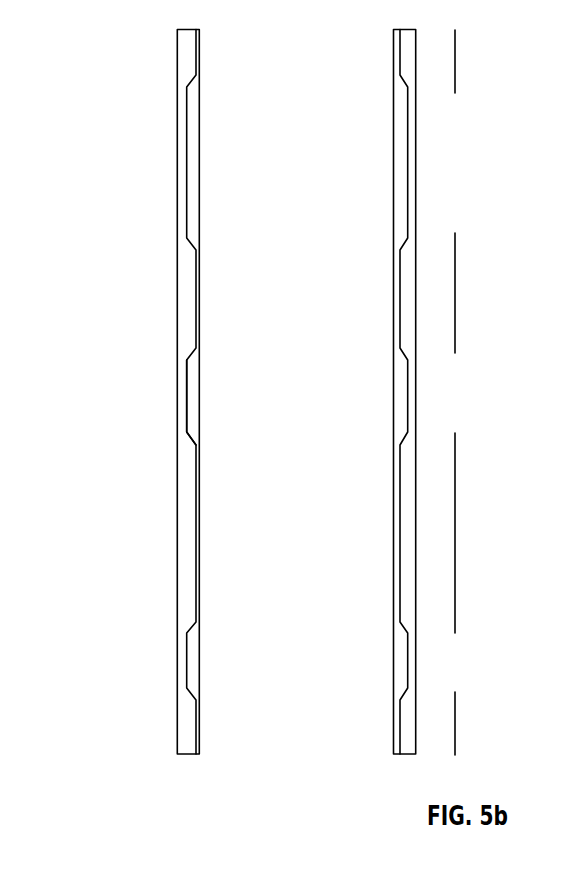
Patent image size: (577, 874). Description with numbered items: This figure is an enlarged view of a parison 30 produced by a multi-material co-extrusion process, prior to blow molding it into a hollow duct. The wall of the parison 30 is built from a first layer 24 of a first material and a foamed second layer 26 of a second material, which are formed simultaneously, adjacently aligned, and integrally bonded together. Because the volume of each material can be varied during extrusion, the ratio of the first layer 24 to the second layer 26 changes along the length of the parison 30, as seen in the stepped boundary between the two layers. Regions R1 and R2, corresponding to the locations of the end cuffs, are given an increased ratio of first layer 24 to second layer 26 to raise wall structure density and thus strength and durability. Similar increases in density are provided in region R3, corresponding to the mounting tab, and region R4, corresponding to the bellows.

The parison 30 is at (178, 210).
The first layer 24 is at (185, 302).
The second layer 26 is at (193, 393).
The region R1 is at (455, 70).
The region R2 is at (455, 718).
The region R3 is at (455, 305).
The region R4 is at (455, 540).